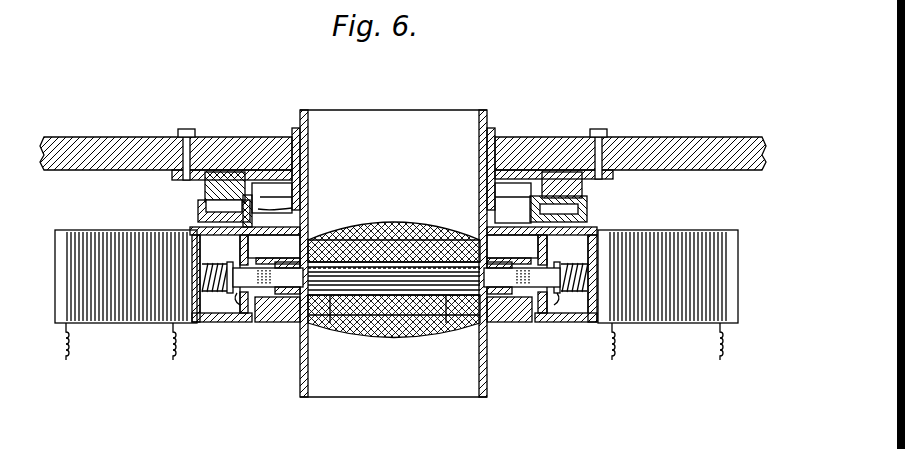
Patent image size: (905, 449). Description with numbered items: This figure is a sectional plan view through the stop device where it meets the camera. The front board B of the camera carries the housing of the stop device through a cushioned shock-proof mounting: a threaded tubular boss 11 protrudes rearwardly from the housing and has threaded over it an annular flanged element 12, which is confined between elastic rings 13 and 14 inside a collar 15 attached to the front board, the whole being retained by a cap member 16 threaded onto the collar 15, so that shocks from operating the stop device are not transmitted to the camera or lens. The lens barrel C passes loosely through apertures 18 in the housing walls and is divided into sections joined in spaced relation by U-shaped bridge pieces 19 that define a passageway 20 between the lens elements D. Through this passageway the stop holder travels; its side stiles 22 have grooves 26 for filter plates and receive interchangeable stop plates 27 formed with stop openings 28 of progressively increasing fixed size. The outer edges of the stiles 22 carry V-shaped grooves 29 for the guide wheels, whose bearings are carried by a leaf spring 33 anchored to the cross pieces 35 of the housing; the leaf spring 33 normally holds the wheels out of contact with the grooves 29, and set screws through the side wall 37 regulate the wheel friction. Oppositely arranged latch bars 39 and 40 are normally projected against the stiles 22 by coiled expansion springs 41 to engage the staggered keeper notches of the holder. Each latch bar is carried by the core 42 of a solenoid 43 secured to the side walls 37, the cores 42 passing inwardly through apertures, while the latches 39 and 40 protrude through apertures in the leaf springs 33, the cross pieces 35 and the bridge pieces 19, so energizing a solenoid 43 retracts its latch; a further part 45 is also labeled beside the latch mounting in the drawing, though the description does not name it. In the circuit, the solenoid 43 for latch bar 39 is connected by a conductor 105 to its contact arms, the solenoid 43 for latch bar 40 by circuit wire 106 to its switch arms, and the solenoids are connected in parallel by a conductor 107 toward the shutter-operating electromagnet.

The front board B is at (678, 147).
The lens barrel C is at (414, 391).
The lens elements D is at (350, 244).
The threaded tubular boss 11 is at (290, 206).
The annular flanged element 12 is at (247, 172).
The elastic ring 13 is at (232, 172).
The elastic ring 14 is at (215, 209).
The collar 15 is at (580, 183).
The cap member 16 is at (586, 210).
The apertures 18 is at (535, 348).
The U-shaped bridge pieces 19 is at (393, 274).
The passageway 20 is at (385, 264).
The side stiles 22 is at (281, 293).
The grooves 26 is at (425, 276).
The stop plates 27 is at (331, 323).
The stop openings 28 is at (446, 320).
The V-shaped grooves 29 is at (516, 322).
The leaf spring 33 is at (237, 292).
The cross pieces 35 is at (248, 296).
The side wall 37 is at (195, 233).
The latch bar 39 is at (522, 277).
The latch bar 40 is at (268, 277).
The coiled expansion springs 41 is at (586, 343).
The core 42 is at (205, 346).
The solenoid 43 is at (126, 305).
The block 45 is at (291, 325).
The conductor 105 is at (722, 358).
The circuit wire 106 is at (66, 361).
The conductor 107 is at (173, 361).